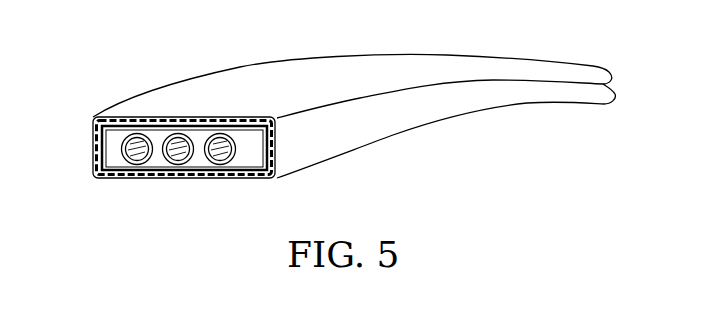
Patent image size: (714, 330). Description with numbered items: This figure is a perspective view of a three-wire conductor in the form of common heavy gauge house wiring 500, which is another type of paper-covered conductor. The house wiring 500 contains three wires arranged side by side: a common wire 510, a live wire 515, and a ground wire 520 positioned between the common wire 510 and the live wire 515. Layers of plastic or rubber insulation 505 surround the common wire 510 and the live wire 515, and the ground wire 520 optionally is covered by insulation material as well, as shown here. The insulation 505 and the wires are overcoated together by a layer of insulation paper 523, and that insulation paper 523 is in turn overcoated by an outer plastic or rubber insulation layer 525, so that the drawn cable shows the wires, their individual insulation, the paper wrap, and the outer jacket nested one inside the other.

The heavy gauge house wiring 500 is at (140, 57).
The plastic or rubber insulation 505 is at (131, 168).
The common wire 510 is at (122, 149).
The live wire 515 is at (220, 167).
The ground wire 520 is at (198, 182).
The insulation paper 523 is at (93, 166).
The plastic or rubber insulation layer 525 is at (487, 99).